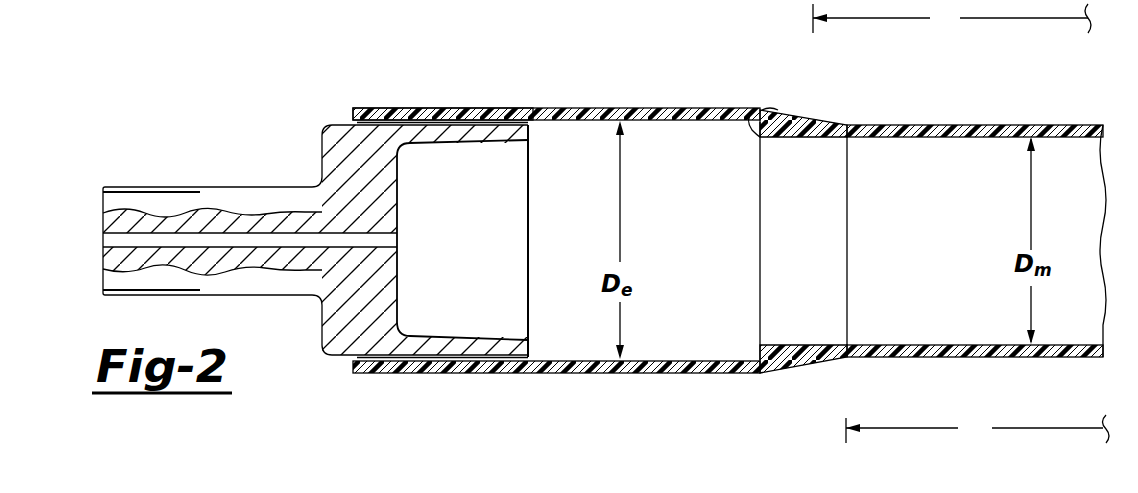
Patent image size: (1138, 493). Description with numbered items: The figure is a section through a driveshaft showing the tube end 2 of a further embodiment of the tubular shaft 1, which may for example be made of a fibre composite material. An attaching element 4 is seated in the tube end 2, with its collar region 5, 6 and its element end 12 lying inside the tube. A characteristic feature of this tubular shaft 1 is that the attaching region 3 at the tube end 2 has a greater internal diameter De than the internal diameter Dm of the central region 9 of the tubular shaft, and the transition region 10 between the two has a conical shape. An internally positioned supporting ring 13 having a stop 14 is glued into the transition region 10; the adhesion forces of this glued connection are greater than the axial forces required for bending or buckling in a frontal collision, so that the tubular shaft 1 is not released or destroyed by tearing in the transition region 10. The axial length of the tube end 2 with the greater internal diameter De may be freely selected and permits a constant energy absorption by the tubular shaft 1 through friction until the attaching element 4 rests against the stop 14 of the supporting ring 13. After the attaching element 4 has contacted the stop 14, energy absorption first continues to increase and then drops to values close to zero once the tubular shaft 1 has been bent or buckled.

The tubular shaft 1 is at (908, 110).
The tube end 2 is at (655, 108).
The attaching region 3 is at (408, 112).
The attaching element 4 is at (252, 165).
The collar region 5 is at (366, 112).
The collar region 6 is at (520, 112).
The central region of tubular shaft 9 is at (961, 224).
The transition region 10 is at (797, 118).
The element end 12 is at (360, 307).
The supporting ring 13 is at (775, 120).
The stop 14 is at (745, 118).